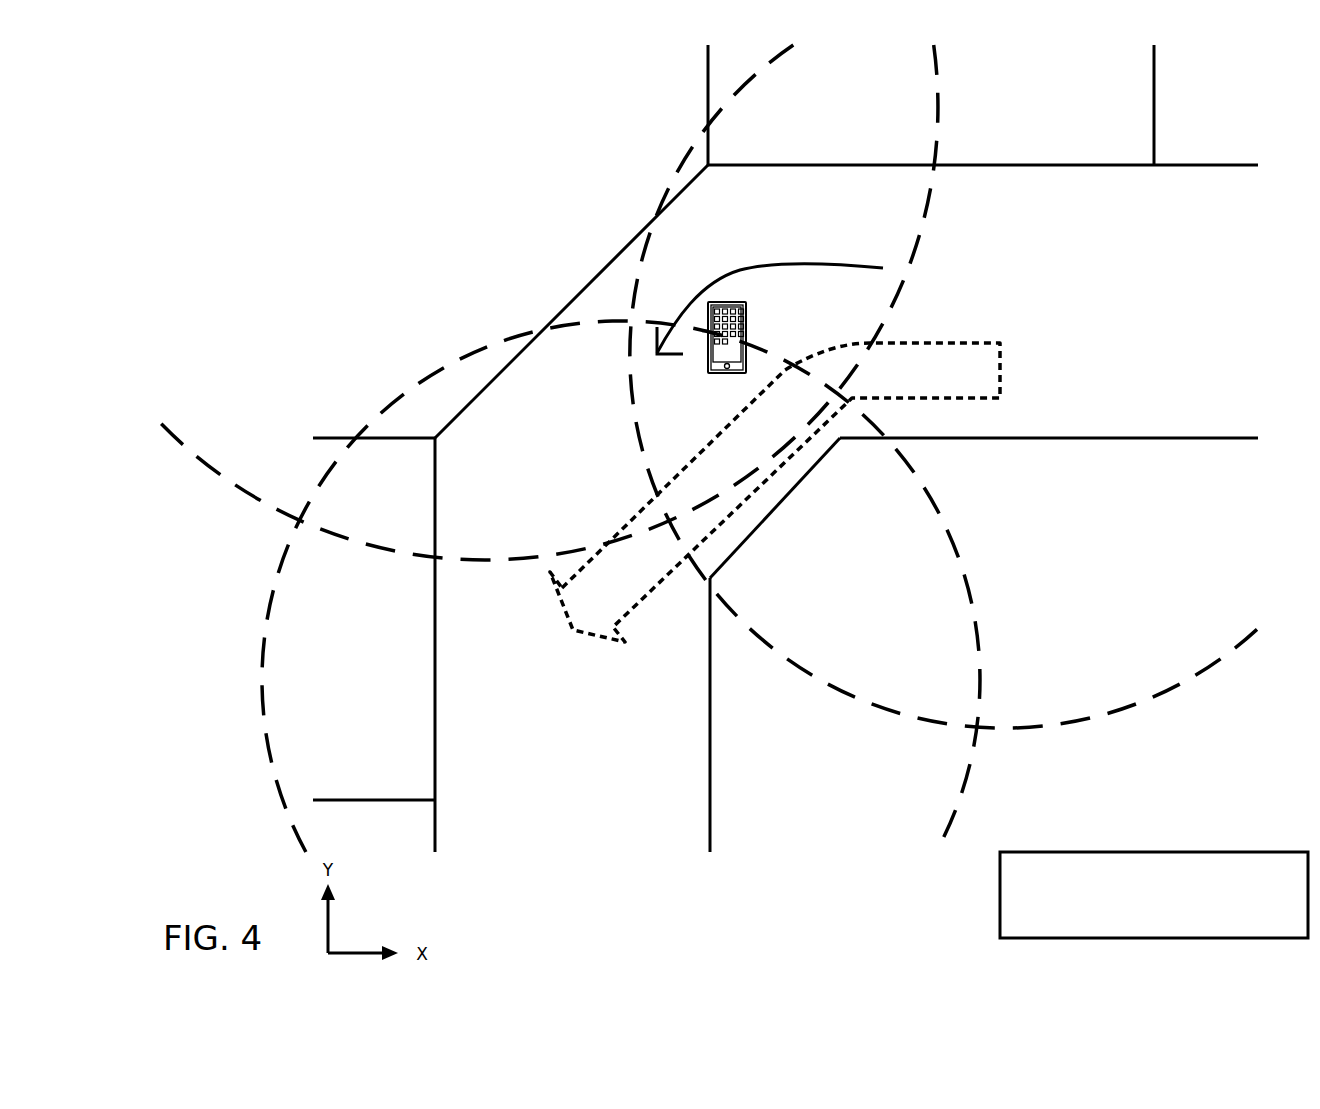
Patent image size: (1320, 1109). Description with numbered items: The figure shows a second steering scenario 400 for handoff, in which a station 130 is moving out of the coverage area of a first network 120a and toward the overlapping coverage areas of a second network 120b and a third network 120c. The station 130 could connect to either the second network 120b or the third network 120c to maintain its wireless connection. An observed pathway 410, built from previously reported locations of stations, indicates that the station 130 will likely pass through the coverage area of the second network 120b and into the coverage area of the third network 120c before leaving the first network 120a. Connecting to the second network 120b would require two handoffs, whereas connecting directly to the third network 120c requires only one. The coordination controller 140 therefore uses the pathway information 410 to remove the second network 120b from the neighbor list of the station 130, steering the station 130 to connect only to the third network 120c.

The second steering scenario 400 is at (285, 155).
The first network 120a is at (1213, 665).
The second network 120b is at (920, 232).
The third network 120c is at (262, 688).
The station 130 is at (708, 372).
The observed pathway 410 is at (1000, 372).
The coordination controller 140 is at (1154, 895).